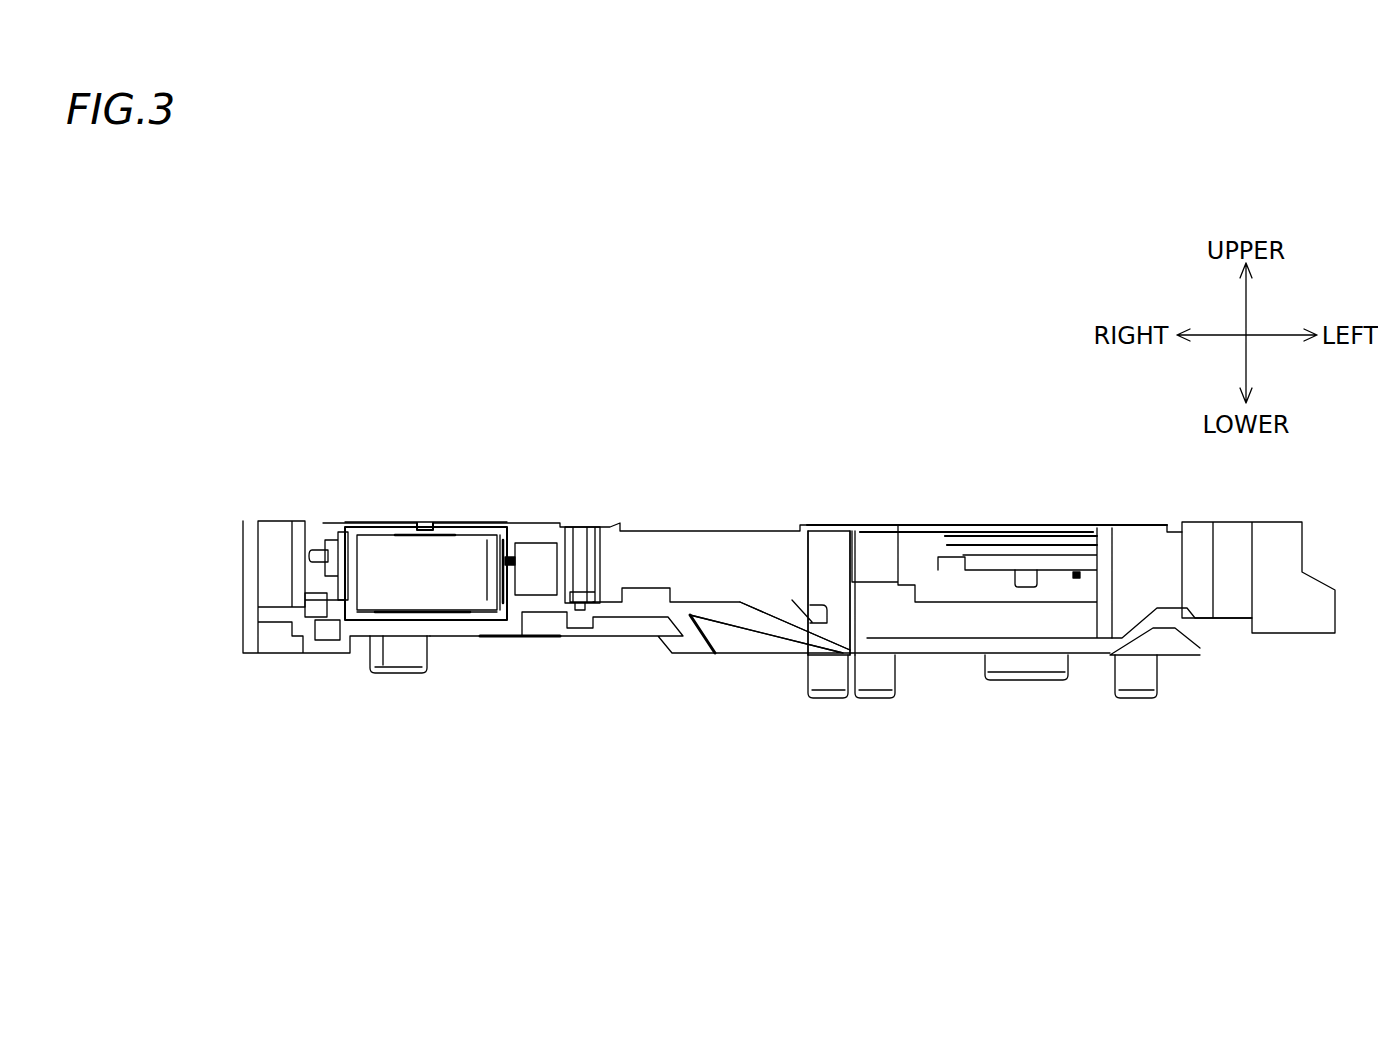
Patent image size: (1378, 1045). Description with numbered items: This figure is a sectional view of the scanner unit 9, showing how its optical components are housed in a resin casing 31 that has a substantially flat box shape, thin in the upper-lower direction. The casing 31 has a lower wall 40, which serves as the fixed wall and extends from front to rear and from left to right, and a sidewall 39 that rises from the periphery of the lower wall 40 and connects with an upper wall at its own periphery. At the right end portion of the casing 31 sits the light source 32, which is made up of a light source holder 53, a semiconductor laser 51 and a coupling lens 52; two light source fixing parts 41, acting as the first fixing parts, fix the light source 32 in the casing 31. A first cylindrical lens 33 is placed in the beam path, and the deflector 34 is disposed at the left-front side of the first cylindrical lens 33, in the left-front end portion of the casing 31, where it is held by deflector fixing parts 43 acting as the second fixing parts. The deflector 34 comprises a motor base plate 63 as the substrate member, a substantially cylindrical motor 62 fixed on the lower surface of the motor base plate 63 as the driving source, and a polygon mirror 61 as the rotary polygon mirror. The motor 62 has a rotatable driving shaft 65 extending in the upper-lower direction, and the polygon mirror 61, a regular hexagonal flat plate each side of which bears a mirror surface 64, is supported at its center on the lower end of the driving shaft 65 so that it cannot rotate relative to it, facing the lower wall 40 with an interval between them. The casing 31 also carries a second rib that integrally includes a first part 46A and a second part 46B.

The scanner unit 9 is at (744, 813).
The casing 31 is at (713, 653).
The light source 32 is at (430, 524).
The first cylindrical lens 33 is at (583, 537).
The deflector 34 is at (1008, 522).
The sidewall 39 is at (1288, 527).
The lower wall 40 is at (768, 623).
The light source fixing part 41 is at (408, 660).
The deflector fixing part 43 is at (872, 687).
The first part 46A is at (538, 578).
The second part 46B is at (905, 620).
The semiconductor laser 51 is at (325, 538).
The coupling lens 52 is at (510, 541).
The light source holder 53 is at (385, 537).
The polygon mirror 61 is at (1078, 580).
The motor 62 is at (1048, 532).
The motor base plate 63 is at (923, 527).
The mirror surface 64 is at (1073, 568).
The driving shaft 65 is at (1030, 572).